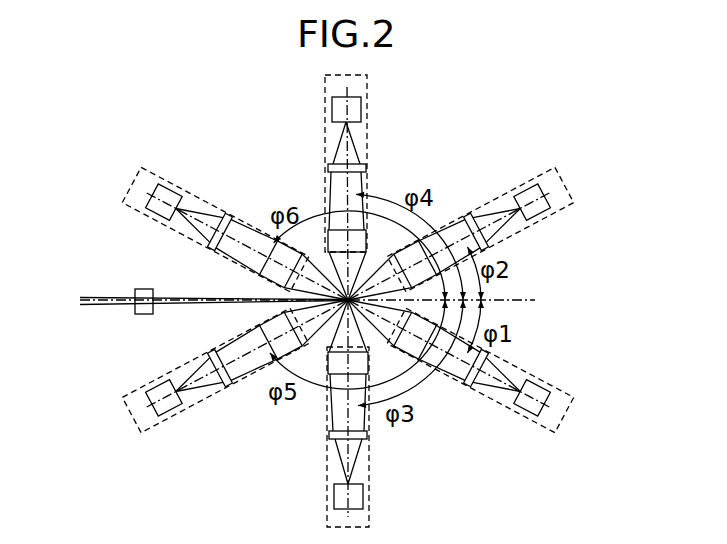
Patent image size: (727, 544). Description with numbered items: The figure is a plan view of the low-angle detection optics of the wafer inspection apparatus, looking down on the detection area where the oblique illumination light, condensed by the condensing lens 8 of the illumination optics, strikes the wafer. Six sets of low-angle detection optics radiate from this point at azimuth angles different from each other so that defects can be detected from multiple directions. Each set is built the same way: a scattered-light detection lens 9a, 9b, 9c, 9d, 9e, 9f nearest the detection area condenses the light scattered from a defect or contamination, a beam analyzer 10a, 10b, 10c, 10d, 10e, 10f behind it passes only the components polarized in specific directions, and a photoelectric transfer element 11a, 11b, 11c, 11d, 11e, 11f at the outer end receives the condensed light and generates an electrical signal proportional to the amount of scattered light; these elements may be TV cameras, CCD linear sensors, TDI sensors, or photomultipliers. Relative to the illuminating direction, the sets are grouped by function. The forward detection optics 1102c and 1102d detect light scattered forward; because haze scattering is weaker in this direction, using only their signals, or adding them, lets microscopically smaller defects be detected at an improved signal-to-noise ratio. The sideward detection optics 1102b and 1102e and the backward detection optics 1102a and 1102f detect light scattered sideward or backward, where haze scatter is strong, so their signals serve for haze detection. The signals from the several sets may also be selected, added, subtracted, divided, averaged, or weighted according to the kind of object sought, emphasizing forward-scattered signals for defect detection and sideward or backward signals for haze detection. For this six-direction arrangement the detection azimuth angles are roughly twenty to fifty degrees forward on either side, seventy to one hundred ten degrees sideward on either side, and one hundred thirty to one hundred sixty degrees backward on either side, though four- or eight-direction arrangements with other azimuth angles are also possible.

The condensing lens 8 is at (143, 313).
The scattered-light detection lens 9a is at (270, 318).
The scattered-light detection lens 9b is at (329, 368).
The scattered-light detection lens 9c is at (412, 354).
The scattered-light detection lens 9d is at (425, 238).
The scattered-light detection lens 9e is at (330, 226).
The scattered-light detection lens 9f is at (268, 280).
The beam analyzer 10a is at (227, 383).
The beam analyzer 10b is at (329, 436).
The beam analyzer 10c is at (470, 386).
The beam analyzer 10d is at (488, 246).
The beam analyzer 10e is at (366, 165).
The beam analyzer 10f is at (228, 214).
The photoelectric transfer element 11a is at (156, 413).
The photoelectric transfer element 11b is at (333, 495).
The photoelectric transfer element 11c is at (528, 410).
The photoelectric transfer element 11d is at (548, 212).
The photoelectric transfer element 11e is at (362, 105).
The photoelectric transfer element 11f is at (160, 184).
The backward detection optics 1102a is at (124, 394).
The sideward detection optics 1102b is at (369, 500).
The forward detection optics 1102c is at (570, 390).
The forward detection optics 1102d is at (562, 178).
The sideward detection optics 1102e is at (324, 92).
The backward detection optics 1102f is at (122, 204).